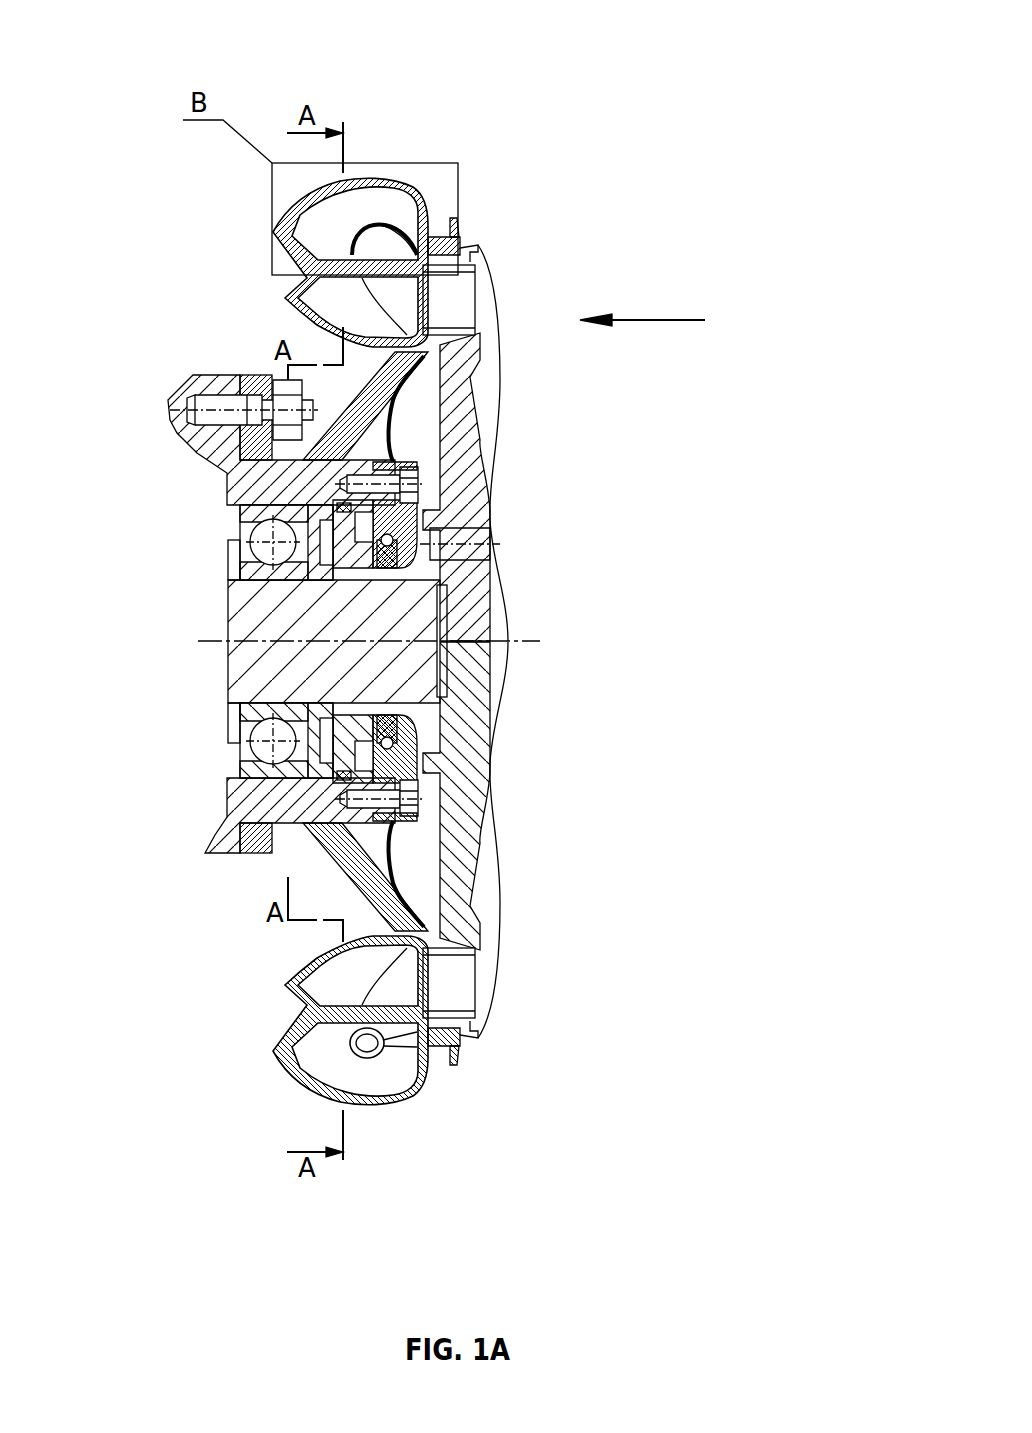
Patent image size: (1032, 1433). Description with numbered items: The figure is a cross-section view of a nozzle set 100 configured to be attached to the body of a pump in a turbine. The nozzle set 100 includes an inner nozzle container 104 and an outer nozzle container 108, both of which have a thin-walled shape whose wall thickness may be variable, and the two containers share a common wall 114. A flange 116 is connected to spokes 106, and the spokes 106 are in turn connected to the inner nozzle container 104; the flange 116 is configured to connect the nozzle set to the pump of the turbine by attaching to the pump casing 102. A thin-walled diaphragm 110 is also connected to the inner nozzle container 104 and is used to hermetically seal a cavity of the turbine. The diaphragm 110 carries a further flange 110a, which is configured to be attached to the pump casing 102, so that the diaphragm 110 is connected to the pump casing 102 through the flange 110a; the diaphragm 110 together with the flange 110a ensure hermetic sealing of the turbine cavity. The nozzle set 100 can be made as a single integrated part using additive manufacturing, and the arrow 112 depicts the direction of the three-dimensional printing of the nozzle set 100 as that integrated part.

The nozzle set 100 is at (715, 75).
The pump casing 102 is at (213, 388).
The inner nozzle container 104 is at (368, 315).
The spokes 106 is at (340, 410).
The outer nozzle container 108 is at (368, 208).
The diaphragm 110 is at (393, 412).
The flange 110a is at (400, 517).
The arrow 112 is at (653, 322).
The common wall 114 is at (377, 268).
The flange 116 is at (262, 377).